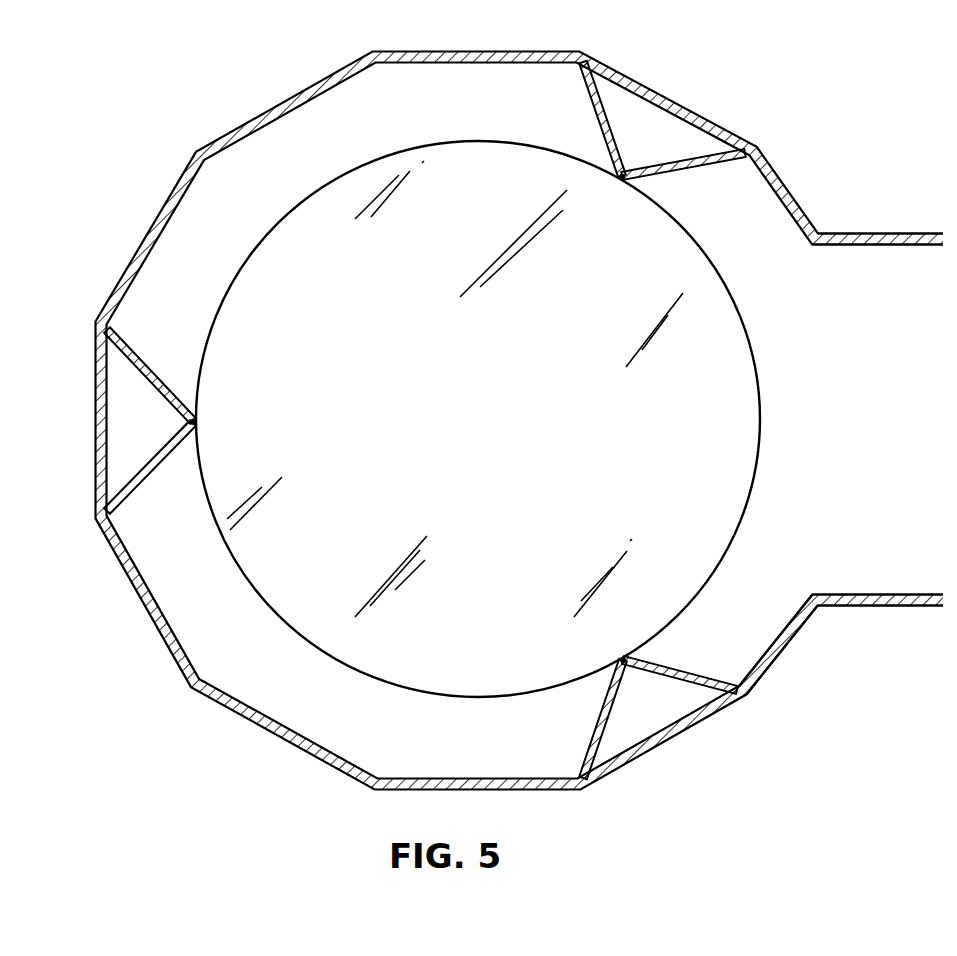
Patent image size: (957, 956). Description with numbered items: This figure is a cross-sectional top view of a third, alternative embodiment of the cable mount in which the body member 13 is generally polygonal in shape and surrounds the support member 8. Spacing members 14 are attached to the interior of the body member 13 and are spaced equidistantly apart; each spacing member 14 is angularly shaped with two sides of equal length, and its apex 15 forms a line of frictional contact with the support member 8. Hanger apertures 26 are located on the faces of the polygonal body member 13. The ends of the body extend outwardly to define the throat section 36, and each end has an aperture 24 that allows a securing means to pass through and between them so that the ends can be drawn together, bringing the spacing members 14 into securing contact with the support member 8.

The support member 8 is at (717, 303).
The body member 13 is at (792, 642).
The spacing members 14 is at (598, 110).
The apex 15 is at (635, 180).
The aperture 24 is at (890, 232).
The hanger aperture 26 is at (495, 53).
The throat section 36 is at (824, 431).